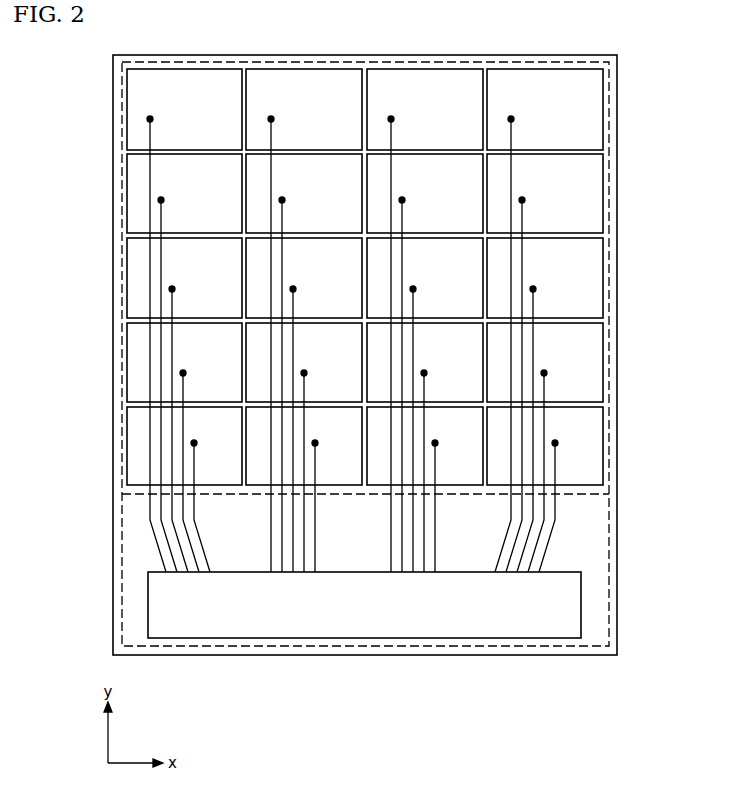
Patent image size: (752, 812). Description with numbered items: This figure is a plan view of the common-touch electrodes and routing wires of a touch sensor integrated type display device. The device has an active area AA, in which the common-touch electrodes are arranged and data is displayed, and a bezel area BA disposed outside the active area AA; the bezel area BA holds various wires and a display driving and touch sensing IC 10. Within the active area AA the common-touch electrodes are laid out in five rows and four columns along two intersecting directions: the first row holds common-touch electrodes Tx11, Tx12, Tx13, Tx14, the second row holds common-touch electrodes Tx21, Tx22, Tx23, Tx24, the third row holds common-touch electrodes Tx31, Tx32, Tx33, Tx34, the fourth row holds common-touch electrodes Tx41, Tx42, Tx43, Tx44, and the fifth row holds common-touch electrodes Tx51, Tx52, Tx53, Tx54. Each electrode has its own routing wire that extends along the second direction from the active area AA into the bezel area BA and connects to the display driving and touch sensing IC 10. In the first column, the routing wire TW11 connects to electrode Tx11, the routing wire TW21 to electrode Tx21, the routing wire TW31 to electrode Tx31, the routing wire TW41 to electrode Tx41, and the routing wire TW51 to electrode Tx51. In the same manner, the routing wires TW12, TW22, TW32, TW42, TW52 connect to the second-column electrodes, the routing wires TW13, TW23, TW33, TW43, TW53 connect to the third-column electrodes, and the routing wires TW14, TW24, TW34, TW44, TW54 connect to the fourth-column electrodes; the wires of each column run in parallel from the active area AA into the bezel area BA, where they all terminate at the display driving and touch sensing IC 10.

The display driving and touch sensing IC 10 is at (457, 622).
The active area AA is at (609, 426).
The bezel area BA is at (609, 548).
The common-touch electrode Tx11 is at (184, 109).
The common-touch electrode Tx12 is at (304, 109).
The common-touch electrode Tx13 is at (425, 109).
The common-touch electrode Tx14 is at (545, 109).
The common-touch electrode Tx21 is at (184, 193).
The common-touch electrode Tx22 is at (304, 193).
The common-touch electrode Tx23 is at (425, 193).
The common-touch electrode Tx24 is at (545, 193).
The common-touch electrode Tx31 is at (184, 278).
The common-touch electrode Tx32 is at (304, 278).
The common-touch electrode Tx33 is at (425, 278).
The common-touch electrode Tx34 is at (545, 278).
The common-touch electrode Tx41 is at (184, 362).
The common-touch electrode Tx42 is at (304, 362).
The common-touch electrode Tx43 is at (425, 362).
The common-touch electrode Tx44 is at (545, 362).
The common-touch electrode Tx51 is at (184, 446).
The common-touch electrode Tx52 is at (304, 446).
The common-touch electrode Tx53 is at (425, 446).
The common-touch electrode Tx54 is at (545, 446).
The (1-1)-th routing wire TW11 is at (152, 132).
The (1-2)-th routing wire TW12 is at (273, 132).
The (1-3)-th routing wire TW13 is at (393, 132).
The (1-4)-th routing wire TW14 is at (513, 132).
The (2-1)-th routing wire TW21 is at (163, 213).
The (2-2)-th routing wire TW22 is at (284, 213).
The (2-3)-th routing wire TW23 is at (404, 213).
The (2-4)-th routing wire TW24 is at (524, 213).
The (3-1)-th routing wire TW31 is at (174, 302).
The (3-2)-th routing wire TW32 is at (295, 302).
The (3-3)-th routing wire TW33 is at (415, 302).
The (3-4)-th routing wire TW34 is at (535, 302).
The (4-1)-th routing wire TW41 is at (185, 386).
The (4-2)-th routing wire TW42 is at (306, 386).
The (4-3)-th routing wire TW43 is at (426, 386).
The (4-4)-th routing wire TW44 is at (546, 386).
The (5-1)-th routing wire TW51 is at (194, 478).
The (5-2)-th routing wire TW52 is at (315, 478).
The (5-3)-th routing wire TW53 is at (435, 478).
The (5-4)-th routing wire TW54 is at (555, 478).